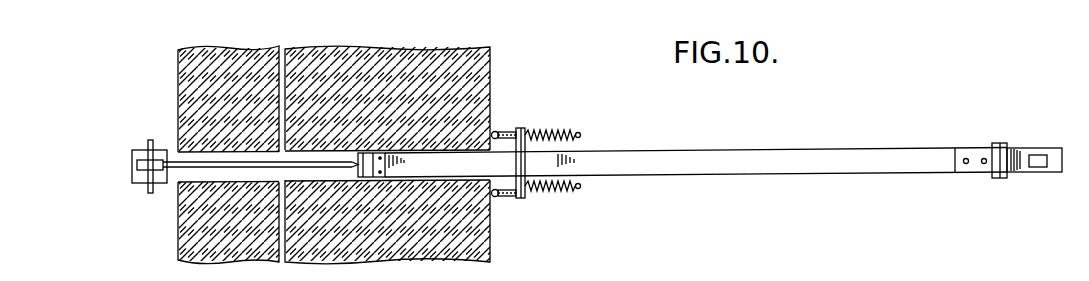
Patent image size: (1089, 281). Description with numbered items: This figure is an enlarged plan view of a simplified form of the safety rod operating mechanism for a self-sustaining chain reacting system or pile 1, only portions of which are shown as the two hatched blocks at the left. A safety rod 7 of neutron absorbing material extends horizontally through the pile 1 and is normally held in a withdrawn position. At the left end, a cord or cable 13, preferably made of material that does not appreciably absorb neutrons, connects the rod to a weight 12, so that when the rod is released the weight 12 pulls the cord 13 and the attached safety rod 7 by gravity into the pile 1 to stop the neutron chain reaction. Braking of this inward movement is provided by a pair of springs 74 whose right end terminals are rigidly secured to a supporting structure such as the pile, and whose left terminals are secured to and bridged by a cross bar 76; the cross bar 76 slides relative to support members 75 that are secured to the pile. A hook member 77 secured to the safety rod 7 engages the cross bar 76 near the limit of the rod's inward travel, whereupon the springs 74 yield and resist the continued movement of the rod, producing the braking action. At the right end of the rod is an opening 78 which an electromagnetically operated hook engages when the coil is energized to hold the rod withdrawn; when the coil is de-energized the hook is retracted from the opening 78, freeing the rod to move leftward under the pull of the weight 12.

The pile 1 is at (491, 62).
The safety rod 7 is at (812, 162).
The weight 12 is at (132, 158).
The cord or cable 13 is at (183, 172).
The springs 74 is at (545, 131).
The support members 75 is at (497, 131).
The cross bar 76 is at (520, 128).
The hook member 77 is at (1000, 180).
The opening 78 is at (1038, 148).